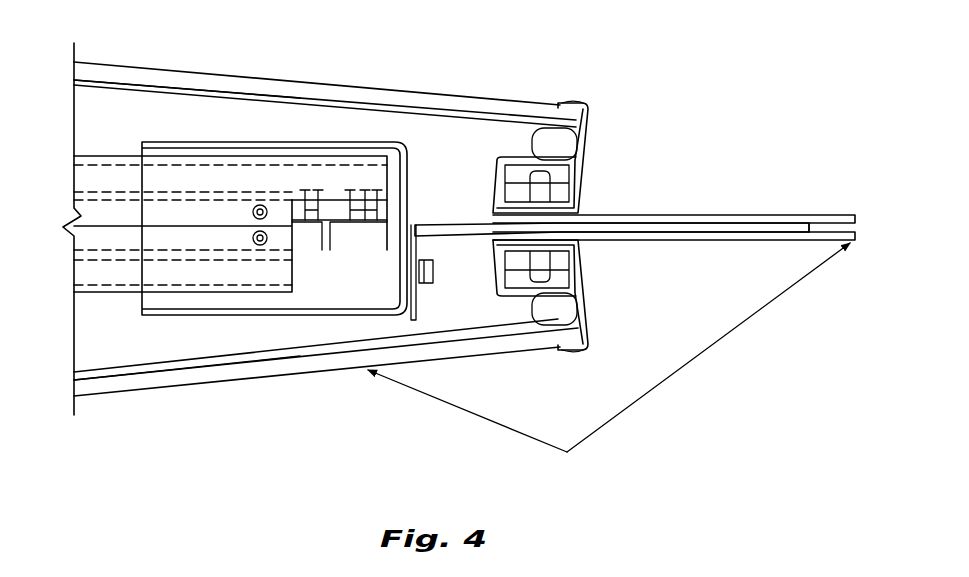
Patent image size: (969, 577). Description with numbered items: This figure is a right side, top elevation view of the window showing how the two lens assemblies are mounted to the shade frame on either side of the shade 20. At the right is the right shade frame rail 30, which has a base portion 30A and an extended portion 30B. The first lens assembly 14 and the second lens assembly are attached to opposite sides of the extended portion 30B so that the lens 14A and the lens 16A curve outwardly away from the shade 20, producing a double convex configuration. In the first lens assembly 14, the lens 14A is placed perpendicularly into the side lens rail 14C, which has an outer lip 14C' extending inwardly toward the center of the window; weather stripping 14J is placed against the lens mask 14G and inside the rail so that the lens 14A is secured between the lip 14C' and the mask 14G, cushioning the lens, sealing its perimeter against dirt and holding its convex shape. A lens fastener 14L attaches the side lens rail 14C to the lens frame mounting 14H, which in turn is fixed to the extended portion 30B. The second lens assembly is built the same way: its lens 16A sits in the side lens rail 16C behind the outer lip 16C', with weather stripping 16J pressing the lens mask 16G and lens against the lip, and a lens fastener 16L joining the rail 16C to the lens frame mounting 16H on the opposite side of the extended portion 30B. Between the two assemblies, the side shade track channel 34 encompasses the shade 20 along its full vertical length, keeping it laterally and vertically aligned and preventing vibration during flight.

The first lens assembly 14 is at (609, 365).
The lens 14A is at (253, 372).
The side lens rail 14C is at (584, 295).
The outer lip 14C' is at (550, 376).
The lens mask 14G is at (152, 367).
The lens frame mounting 14H is at (694, 241).
The weather stripping 14J is at (554, 315).
The lens fastener 14L is at (563, 262).
The lens 16A is at (193, 82).
The side lens rail 16C is at (583, 158).
The outer lip 16C' is at (611, 82).
The lens mask 16G is at (158, 92).
The lens frame mounting 16H is at (694, 215).
The weather stripping 16J is at (554, 137).
The lens fastener 16L is at (563, 195).
The shade 20 is at (88, 258).
The right shade frame rail 30 is at (455, 226).
The base portion 30A is at (417, 246).
The extended portion 30B is at (791, 222).
The side shade track channel 34 is at (400, 141).